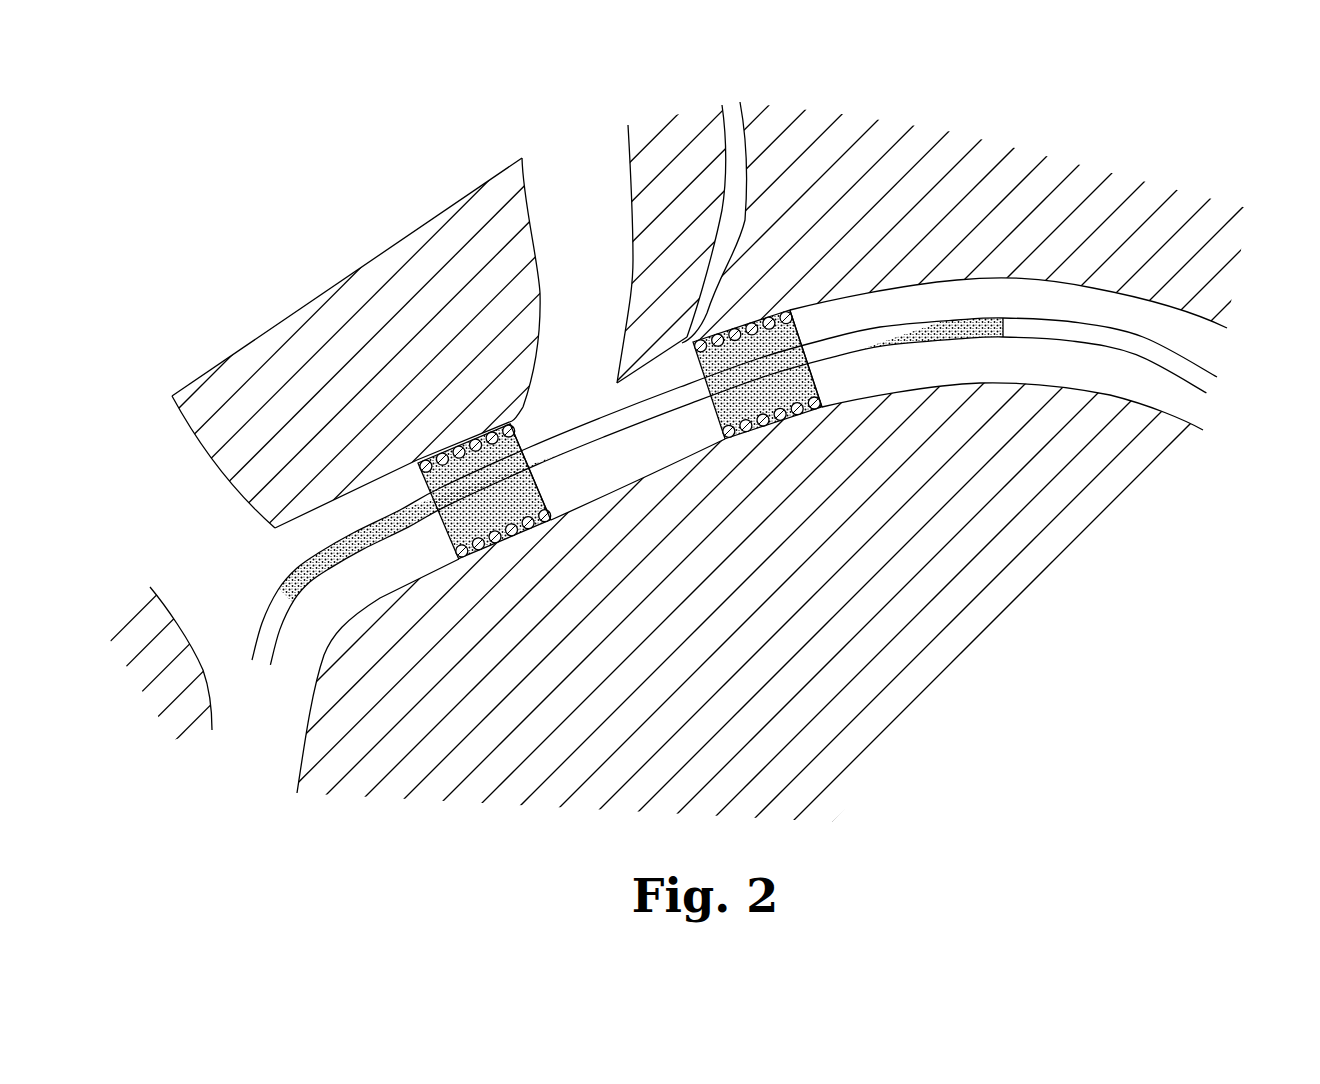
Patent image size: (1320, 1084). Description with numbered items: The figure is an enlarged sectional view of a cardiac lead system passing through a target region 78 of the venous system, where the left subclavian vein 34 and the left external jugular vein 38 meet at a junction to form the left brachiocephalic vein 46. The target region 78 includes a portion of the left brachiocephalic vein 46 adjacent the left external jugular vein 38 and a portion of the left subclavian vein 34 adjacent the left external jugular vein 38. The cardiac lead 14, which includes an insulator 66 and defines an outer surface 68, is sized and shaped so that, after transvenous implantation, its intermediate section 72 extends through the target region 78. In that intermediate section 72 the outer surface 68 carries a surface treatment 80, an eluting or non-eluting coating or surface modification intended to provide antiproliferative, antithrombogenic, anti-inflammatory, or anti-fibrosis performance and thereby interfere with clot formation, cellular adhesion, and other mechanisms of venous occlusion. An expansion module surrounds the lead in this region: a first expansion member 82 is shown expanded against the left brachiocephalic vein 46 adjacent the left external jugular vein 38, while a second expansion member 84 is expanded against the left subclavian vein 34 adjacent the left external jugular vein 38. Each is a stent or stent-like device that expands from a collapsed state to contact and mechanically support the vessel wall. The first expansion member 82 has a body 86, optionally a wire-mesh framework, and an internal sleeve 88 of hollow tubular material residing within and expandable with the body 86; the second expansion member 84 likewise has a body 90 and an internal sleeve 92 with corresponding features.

The cardiac lead 14 is at (1214, 358).
The left subclavian vein 34 is at (971, 270).
The left external jugular vein 38 is at (642, 158).
The left brachiocephalic vein 46 is at (395, 601).
The insulator 66 is at (1075, 330).
The outer surface 68 is at (1147, 333).
The intermediate section 72 is at (930, 355).
The target region 78 is at (456, 296).
The surface treatment 80 is at (640, 432).
The first expansion member 82 is at (493, 471).
The second expansion member 84 is at (789, 360).
The body 86 is at (550, 525).
The internal sleeve 88 is at (508, 545).
The body 90 is at (812, 414).
The internal sleeve 92 is at (782, 427).